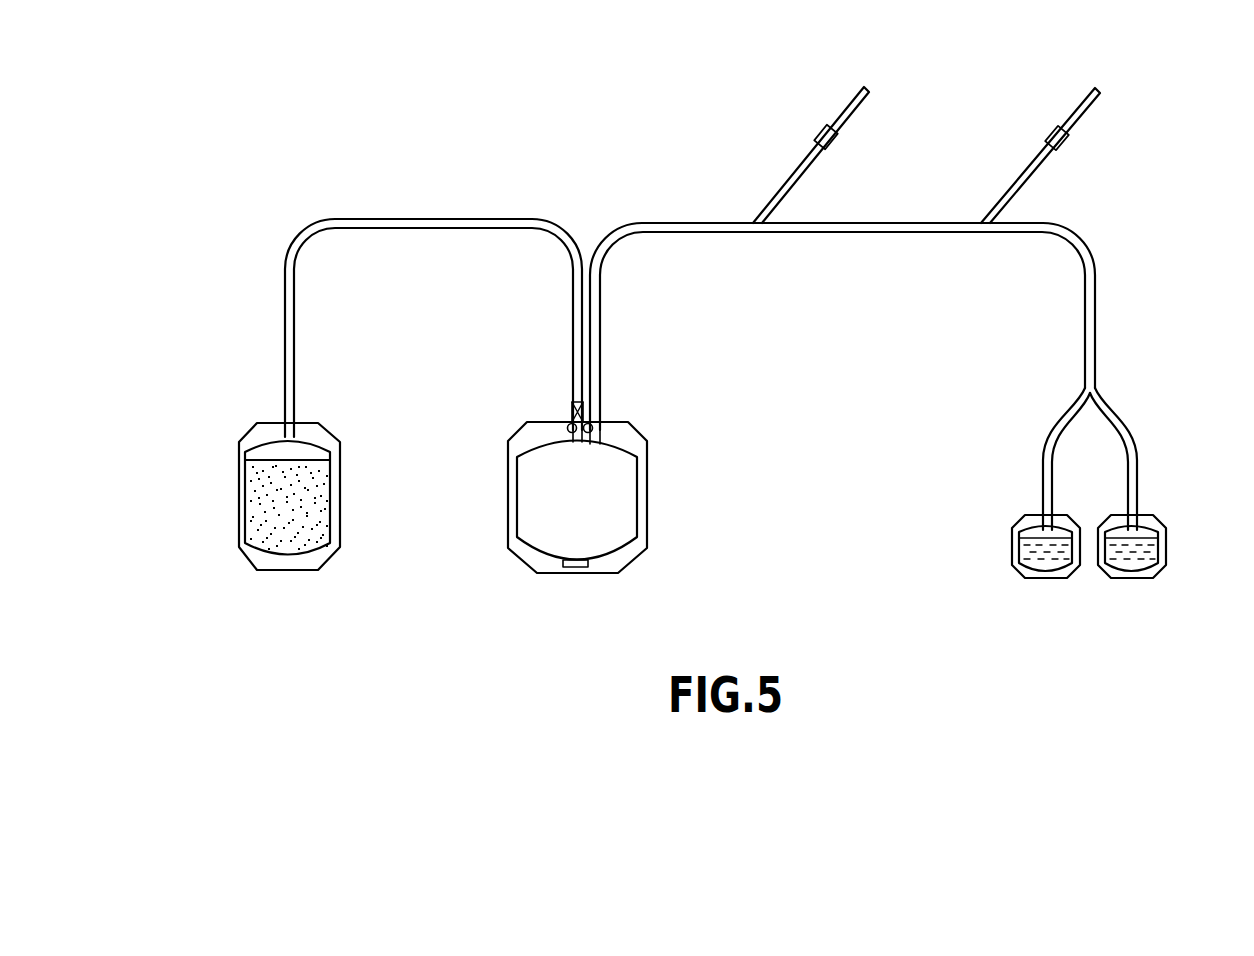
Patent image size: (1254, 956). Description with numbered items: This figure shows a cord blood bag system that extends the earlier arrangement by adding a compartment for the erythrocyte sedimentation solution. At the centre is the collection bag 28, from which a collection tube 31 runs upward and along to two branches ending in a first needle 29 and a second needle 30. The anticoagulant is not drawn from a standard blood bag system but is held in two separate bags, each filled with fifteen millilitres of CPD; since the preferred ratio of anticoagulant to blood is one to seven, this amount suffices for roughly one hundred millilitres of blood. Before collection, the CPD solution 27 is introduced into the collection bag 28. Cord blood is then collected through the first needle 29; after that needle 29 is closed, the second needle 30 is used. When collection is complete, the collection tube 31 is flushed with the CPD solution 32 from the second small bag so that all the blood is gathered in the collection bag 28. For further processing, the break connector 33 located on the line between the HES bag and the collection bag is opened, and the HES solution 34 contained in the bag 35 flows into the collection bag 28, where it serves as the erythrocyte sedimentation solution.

The CPD solution 27 is at (1035, 553).
The collection bag 28 is at (632, 430).
The first needle 29 is at (845, 112).
The second needle 30 is at (1080, 112).
The collection tube 31 is at (668, 223).
The CPD solution 32 is at (1140, 553).
The break connector 33 is at (572, 408).
The HES solution 34 is at (300, 521).
The bag 35 is at (308, 432).